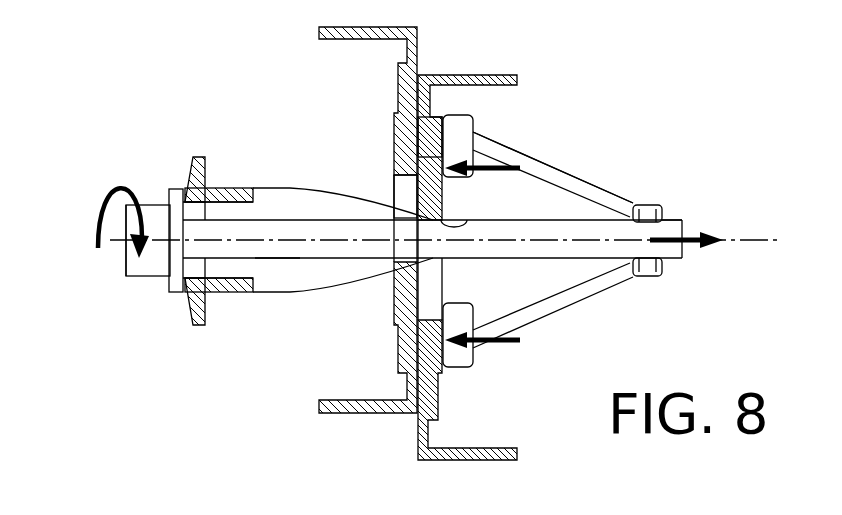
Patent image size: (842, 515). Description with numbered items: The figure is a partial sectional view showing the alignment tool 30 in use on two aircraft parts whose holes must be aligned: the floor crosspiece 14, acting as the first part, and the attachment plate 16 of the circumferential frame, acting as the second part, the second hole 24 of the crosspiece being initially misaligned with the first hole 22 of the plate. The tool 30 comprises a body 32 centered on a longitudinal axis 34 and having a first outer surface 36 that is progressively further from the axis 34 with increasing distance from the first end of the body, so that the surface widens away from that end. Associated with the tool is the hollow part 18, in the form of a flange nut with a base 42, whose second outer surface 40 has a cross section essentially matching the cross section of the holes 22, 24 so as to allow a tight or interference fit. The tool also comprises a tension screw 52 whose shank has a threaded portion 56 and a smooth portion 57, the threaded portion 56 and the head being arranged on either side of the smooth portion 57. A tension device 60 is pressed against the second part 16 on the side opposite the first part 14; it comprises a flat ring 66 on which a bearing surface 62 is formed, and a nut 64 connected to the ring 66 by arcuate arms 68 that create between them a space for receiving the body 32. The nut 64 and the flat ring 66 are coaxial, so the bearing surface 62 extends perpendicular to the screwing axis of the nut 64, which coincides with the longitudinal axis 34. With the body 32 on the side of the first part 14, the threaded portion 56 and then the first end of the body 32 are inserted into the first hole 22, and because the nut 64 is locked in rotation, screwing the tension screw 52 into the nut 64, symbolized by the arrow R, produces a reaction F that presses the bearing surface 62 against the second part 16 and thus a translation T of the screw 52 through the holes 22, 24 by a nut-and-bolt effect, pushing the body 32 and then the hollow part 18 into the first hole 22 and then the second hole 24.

The floor crosspiece 14 is at (396, 356).
The attachment plate 16 is at (440, 398).
The hollow part 18 is at (180, 174).
The first hole 22 is at (393, 178).
The second hole 24 is at (467, 220).
The tool 30 is at (280, 186).
The body 32 is at (315, 282).
The longitudinal axis 34 is at (767, 242).
The first outer surface 36 is at (362, 197).
The second outer surface 40 is at (237, 187).
The base 42 is at (193, 308).
The tension screw 52 is at (148, 284).
The threaded portion 56 is at (667, 220).
The smooth portion 57 is at (277, 262).
The tension device 60 is at (535, 145).
The bearing surface 62 is at (427, 150).
The nut 64 is at (645, 204).
The flat ring 66 is at (465, 363).
The arcuate arms 68 is at (602, 196).
The screwing rotation R is at (114, 190).
The reaction F is at (490, 166).
The translation T is at (702, 230).